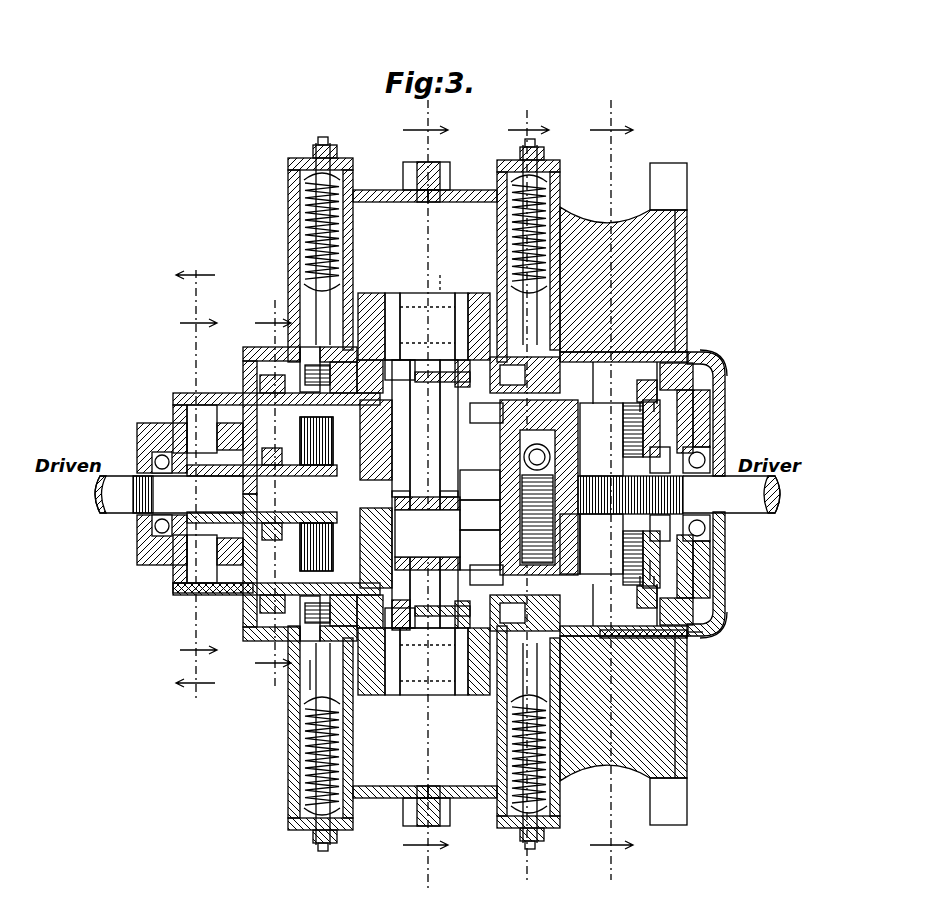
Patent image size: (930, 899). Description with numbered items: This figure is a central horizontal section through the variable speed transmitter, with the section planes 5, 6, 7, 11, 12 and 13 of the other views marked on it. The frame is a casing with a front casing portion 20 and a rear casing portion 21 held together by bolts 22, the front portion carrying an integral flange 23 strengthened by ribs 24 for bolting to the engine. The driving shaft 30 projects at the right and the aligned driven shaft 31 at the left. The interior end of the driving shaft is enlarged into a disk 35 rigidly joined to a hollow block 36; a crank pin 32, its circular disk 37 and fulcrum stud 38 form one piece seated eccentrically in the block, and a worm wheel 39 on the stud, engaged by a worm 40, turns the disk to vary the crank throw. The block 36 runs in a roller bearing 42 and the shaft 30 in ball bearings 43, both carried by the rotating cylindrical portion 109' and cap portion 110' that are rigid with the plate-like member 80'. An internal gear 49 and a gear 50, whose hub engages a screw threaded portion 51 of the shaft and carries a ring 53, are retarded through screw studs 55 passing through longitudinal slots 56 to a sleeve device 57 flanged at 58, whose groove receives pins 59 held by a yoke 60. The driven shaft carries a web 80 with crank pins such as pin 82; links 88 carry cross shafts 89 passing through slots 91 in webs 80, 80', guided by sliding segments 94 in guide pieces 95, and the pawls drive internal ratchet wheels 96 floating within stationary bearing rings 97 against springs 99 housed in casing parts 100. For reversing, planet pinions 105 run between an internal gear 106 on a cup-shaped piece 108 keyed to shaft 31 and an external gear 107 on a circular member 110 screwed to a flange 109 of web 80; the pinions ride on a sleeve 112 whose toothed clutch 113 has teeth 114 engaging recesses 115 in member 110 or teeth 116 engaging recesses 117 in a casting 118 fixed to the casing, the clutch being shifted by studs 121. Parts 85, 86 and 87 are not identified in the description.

The section plane 5— 5 is at (425, 488).
The section plane 6— 6 is at (528, 111).
The section plane 7— 7 is at (611, 478).
The section plane 11— 11 is at (263, 492).
The section plane 12— 12 is at (184, 486).
The section plane 13— 13 is at (210, 478).
The front casing portion 20 is at (462, 506).
The rear casing portion 21 is at (390, 507).
The bolts 22 is at (404, 176).
The integral flange 23 is at (689, 173).
The ribs 24 is at (625, 232).
The driving shaft 30 is at (777, 493).
The driven shaft 31 is at (92, 493).
The crank pin 32 is at (427, 533).
The disk 35 is at (583, 544).
The hollow block 36 is at (564, 492).
The circular disk 37 is at (480, 512).
The fulcrum stud 38 is at (480, 548).
The worm wheel 39 is at (481, 494).
The worm 40 is at (552, 487).
The roller bearing 42 is at (455, 380).
The ball bearings 43 is at (705, 452).
The internal gear 49 is at (665, 428).
The gear 50 is at (630, 479).
The screw threaded portion 51 is at (601, 488).
The ring 53 is at (695, 408).
The screw studs 55 is at (645, 378).
The longitudinal slots 56 is at (632, 382).
The sleeve device 57 is at (695, 382).
The flanges 58 is at (708, 362).
The studs or pins 59 is at (705, 636).
The yoke 60 is at (722, 352).
The web 80 is at (297, 508).
The plate-like member 80' is at (514, 506).
The pin 82 is at (443, 272).
The sleeve 85 is at (396, 615).
The sleeve 86 is at (385, 420).
The piston rod 87 is at (393, 295).
The links 88 is at (422, 372).
The cross shafts 89 is at (430, 410).
The slots 91 is at (398, 358).
The sliding segments 94 is at (590, 640).
The guide pieces 95 is at (292, 352).
The internal ratchet wheels 96 is at (570, 348).
The stationary bearing ring 97 is at (565, 672).
The spring 99 is at (303, 198).
The casing part 100 is at (290, 165).
The planet pinions 105 is at (312, 530).
The internal gear 106 is at (245, 612).
The external gear 107 is at (230, 588).
The cup-shaped piece 108 is at (255, 400).
The rearwardly extending flange 109 is at (242, 487).
The cylindrical portion 109' is at (739, 453).
The circular member 110 is at (161, 583).
The cap portion 110' is at (733, 558).
The sleeve 112 is at (140, 450).
The toothed clutch 113 is at (220, 425).
The teeth 114 is at (240, 478).
The recesses 115 is at (268, 525).
The clutch teeth 116 is at (185, 412).
The recesses 117 is at (175, 412).
The casting 118 is at (140, 556).
The studs 121 is at (220, 560).